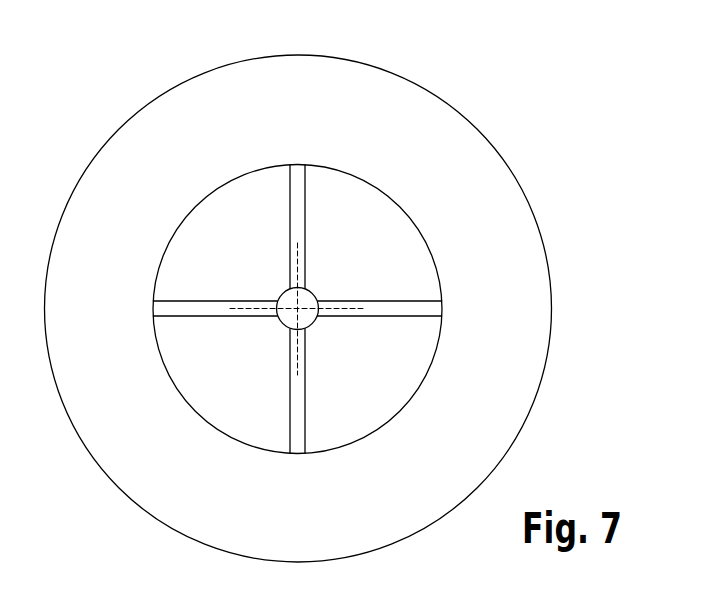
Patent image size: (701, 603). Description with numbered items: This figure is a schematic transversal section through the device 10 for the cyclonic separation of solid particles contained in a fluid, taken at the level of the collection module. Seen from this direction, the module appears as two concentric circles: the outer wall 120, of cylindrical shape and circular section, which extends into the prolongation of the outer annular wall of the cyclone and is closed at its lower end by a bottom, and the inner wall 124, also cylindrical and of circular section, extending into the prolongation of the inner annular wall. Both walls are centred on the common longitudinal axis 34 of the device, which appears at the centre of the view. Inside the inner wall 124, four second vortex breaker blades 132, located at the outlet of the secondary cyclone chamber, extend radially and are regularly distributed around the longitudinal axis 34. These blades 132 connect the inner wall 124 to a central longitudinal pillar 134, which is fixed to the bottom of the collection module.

The device 10 is at (503, 83).
The outer wall 120 is at (512, 170).
The inner wall 124 is at (433, 257).
The second vortex breaker blades 132 is at (413, 315).
The central longitudinal pillar 134 is at (277, 328).
The longitudinal axis 34 is at (298, 308).